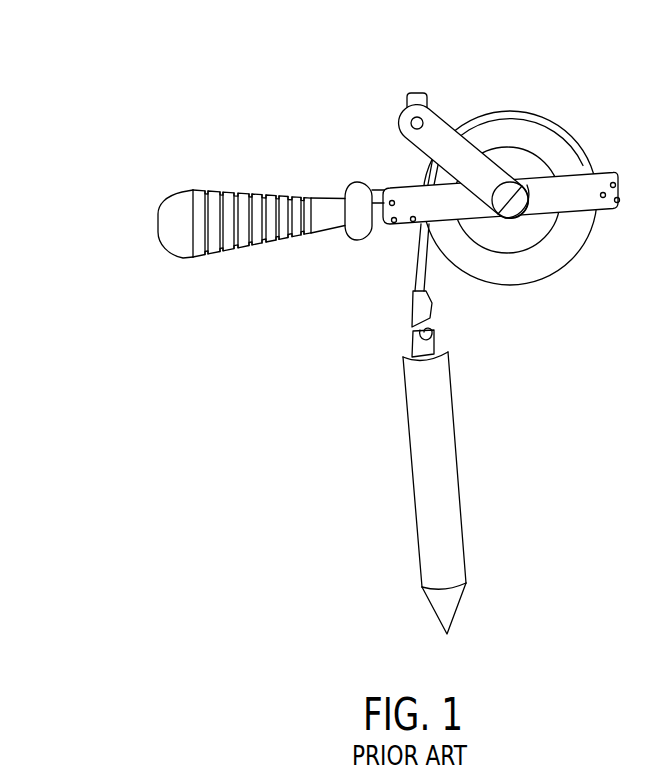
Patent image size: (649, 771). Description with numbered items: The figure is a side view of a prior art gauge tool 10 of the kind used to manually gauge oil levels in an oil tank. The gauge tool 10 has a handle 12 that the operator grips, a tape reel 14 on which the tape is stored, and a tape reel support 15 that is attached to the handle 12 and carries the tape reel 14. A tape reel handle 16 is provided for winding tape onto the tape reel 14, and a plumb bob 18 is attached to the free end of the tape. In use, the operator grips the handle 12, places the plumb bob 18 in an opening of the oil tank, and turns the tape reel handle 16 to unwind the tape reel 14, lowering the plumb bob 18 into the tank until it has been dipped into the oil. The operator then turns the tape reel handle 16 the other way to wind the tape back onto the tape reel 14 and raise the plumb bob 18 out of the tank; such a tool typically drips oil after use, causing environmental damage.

The gauge tool 10 is at (116, 50).
The handle 12 is at (247, 193).
The tape reel 14 is at (548, 137).
The tape reel support 15 is at (396, 206).
The tape reel handle 16 is at (434, 126).
The plumb bob 18 is at (452, 488).